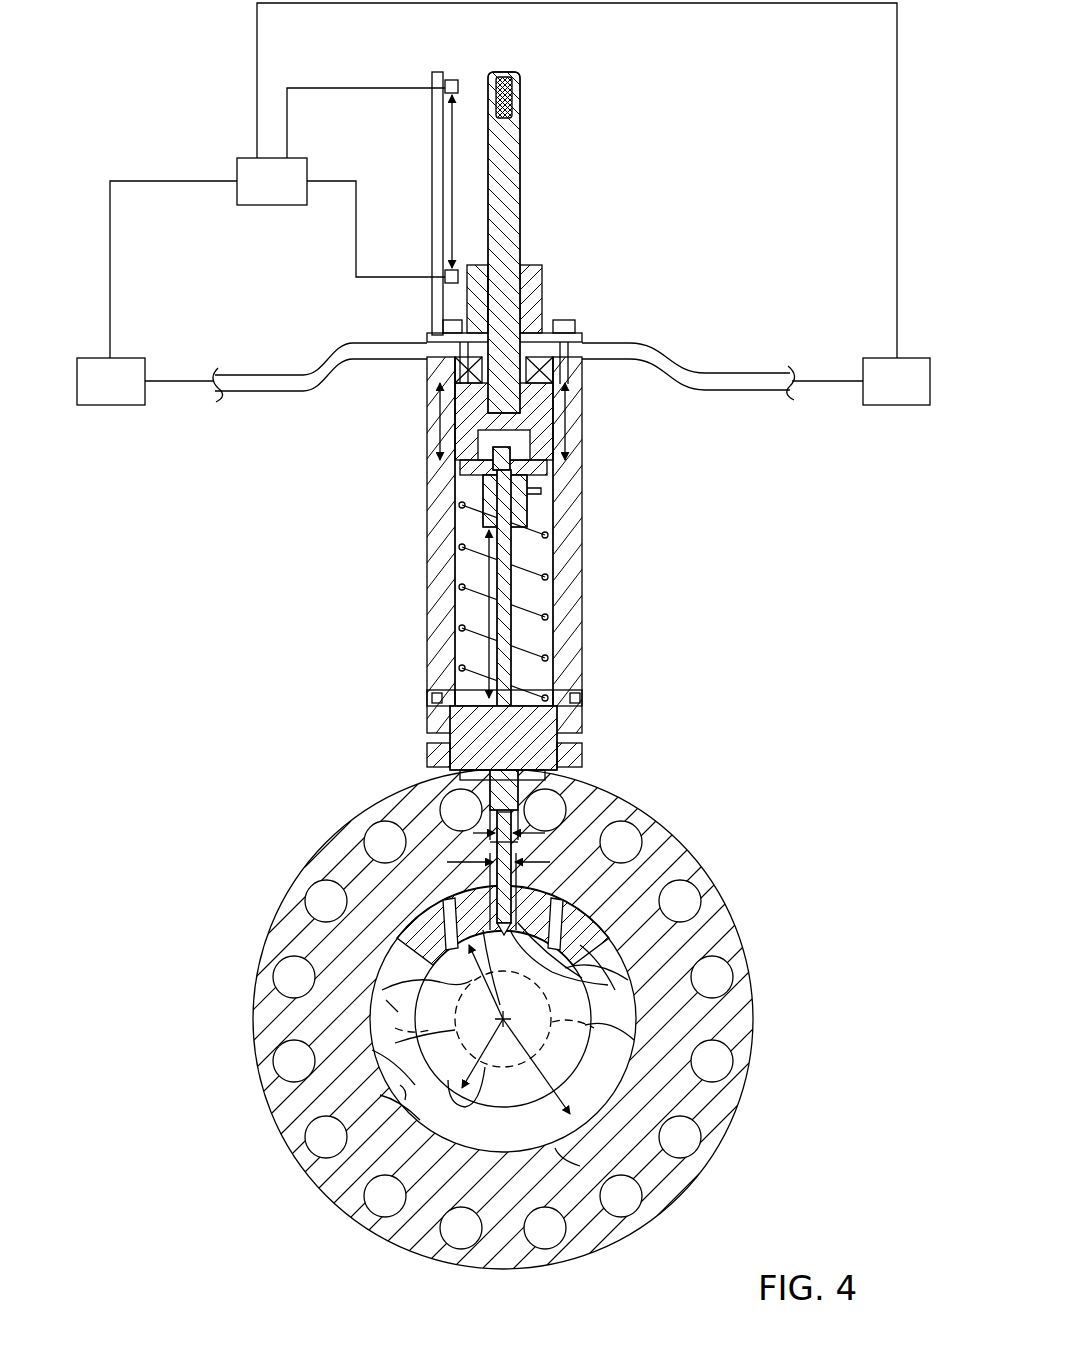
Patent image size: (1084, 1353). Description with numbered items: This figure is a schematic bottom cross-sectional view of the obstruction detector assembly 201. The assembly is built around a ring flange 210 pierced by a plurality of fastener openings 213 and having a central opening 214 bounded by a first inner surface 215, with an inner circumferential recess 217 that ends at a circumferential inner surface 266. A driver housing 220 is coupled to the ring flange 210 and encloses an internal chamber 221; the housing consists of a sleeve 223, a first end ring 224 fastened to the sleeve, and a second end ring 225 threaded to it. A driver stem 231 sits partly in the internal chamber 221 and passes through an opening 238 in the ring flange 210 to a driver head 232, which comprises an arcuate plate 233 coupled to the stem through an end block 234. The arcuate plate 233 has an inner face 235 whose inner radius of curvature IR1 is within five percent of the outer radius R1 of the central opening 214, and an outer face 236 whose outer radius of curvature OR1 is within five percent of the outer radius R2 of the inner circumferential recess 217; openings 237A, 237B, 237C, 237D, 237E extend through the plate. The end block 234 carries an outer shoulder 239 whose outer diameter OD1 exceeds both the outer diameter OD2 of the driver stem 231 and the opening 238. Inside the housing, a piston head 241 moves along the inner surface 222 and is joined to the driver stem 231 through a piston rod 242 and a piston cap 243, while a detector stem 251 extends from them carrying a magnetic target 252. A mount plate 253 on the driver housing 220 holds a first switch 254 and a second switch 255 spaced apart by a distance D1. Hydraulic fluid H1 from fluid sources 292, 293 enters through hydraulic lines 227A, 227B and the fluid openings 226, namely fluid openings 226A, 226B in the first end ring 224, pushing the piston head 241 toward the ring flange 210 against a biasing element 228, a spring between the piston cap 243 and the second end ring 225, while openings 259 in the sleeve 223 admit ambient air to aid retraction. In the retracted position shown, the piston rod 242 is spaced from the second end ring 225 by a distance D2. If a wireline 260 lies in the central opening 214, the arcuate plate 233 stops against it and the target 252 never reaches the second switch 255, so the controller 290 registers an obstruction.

The obstruction detector assembly 201 is at (135, 72).
The ring flange 210 is at (674, 796).
The fastener openings 213 is at (630, 1192).
The central opening 214 is at (395, 1060).
The first inner surface 215 is at (386, 1093).
The inner circumferential recess 217 is at (533, 1128).
The driver housing 220 is at (584, 542).
The internal chamber 221 is at (551, 493).
The inner surface 222 is at (442, 576).
The sleeve 223 is at (566, 408).
The first end ring 224 is at (533, 310).
The second end ring 225 is at (430, 725).
The bore 226 is at (508, 1148).
The fluid opening 226A is at (433, 376).
The fluid opening 226B is at (573, 370).
The hydraulic line 227A is at (328, 351).
The hydraulic line 227B is at (642, 343).
The biasing element 228 is at (556, 656).
The driver stem 231 is at (513, 606).
The driver head 232 is at (549, 808).
The arcuate plate 233 is at (545, 866).
The end block 234 is at (462, 866).
The inner face 235 is at (503, 1019).
The outer face 236 is at (400, 956).
The opening 237A is at (420, 943).
The opening 237B is at (440, 903).
The opening 237C is at (616, 1002).
The opening 237D is at (578, 898).
The opening 237E is at (600, 938).
The opening 238 is at (521, 788).
The outer shoulder 239 is at (503, 743).
The piston head 241 is at (456, 436).
The piston rod 242 is at (465, 510).
The piston cap 243 is at (480, 465).
The detector stem 251 is at (513, 205).
The target 252 is at (513, 93).
The mount plate 253 is at (437, 124).
The first switch 254 is at (450, 78).
The second switch 255 is at (488, 265).
The openings 259 is at (562, 648).
The wireline 260 is at (606, 1033).
The circumferential inner surface 266 is at (405, 1102).
The controller 290 is at (297, 193).
The fluid source 292 is at (135, 394).
The fluid source 293 is at (922, 394).
The distance D1 is at (455, 137).
The distance D2 is at (470, 606).
The hydraulic fluid H1 is at (440, 421).
The inner radius of curvature IR1 is at (436, 1010).
The outer diameter OD1 is at (490, 841).
The outer diameter OD2 is at (482, 810).
The outer radius of curvature OR1 is at (386, 998).
The outer radius R1 is at (470, 1078).
The outer radius R2 is at (562, 1066).